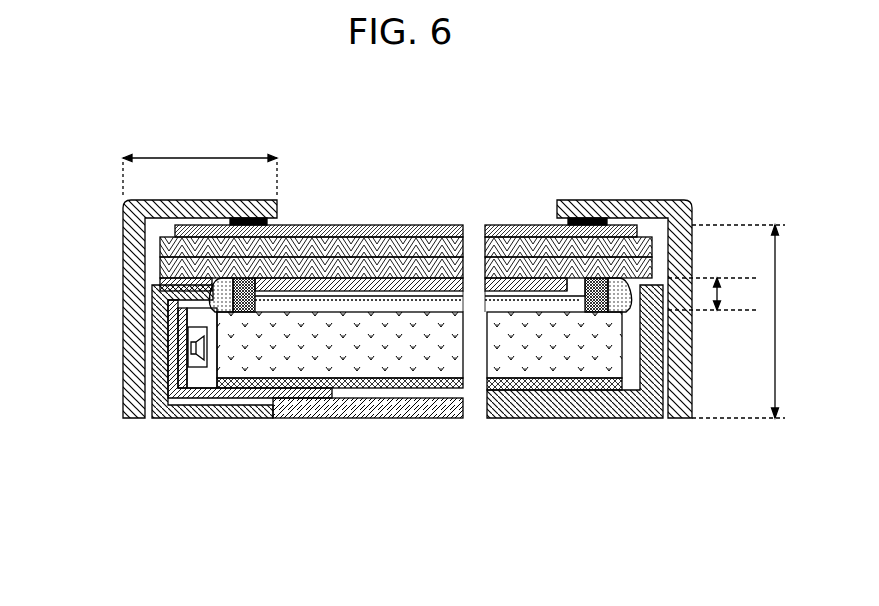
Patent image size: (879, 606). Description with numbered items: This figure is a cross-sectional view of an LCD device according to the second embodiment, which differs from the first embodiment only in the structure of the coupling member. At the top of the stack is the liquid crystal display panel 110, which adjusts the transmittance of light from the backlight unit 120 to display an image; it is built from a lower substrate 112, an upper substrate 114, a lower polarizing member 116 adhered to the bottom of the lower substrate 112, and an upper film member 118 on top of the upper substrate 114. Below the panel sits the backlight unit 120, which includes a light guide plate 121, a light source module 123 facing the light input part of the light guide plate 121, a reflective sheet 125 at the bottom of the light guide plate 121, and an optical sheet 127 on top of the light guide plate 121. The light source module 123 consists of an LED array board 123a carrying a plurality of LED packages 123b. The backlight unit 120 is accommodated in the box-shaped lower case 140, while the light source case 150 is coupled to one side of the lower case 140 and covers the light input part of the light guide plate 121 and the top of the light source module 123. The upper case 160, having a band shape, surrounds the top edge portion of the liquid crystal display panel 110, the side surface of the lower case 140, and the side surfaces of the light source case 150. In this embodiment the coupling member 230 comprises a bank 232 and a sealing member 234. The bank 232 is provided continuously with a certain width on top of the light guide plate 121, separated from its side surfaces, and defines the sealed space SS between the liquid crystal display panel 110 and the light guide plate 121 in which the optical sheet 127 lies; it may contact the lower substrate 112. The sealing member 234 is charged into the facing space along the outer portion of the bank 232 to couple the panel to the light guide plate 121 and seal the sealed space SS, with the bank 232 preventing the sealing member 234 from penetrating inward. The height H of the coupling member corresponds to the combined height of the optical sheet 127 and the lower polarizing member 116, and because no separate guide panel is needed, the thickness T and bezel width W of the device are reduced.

The liquid crystal display panel 110 is at (406, 204).
The lower substrate 112 is at (408, 270).
The upper substrate 114 is at (372, 248).
The lower polarizing member 116 is at (335, 153).
The upper film member 118 is at (334, 232).
The backlight unit 120 is at (395, 436).
The light guide plate 121 is at (290, 352).
The light source module 123 is at (395, 414).
The LED array board 123a is at (248, 391).
The LED packages 123b is at (201, 367).
The reflective sheet 125 is at (348, 386).
The optical sheet 127 is at (429, 312).
The lower case 140 is at (177, 380).
The light source case 150 is at (158, 330).
The upper case 160 is at (140, 260).
The coupling member 230 is at (420, 396).
The bank 232 is at (590, 314).
The sealing member 234 is at (617, 312).
The sealed space SS is at (570, 285).
The bezel width W is at (200, 167).
The height H is at (712, 294).
The thickness T is at (743, 321).